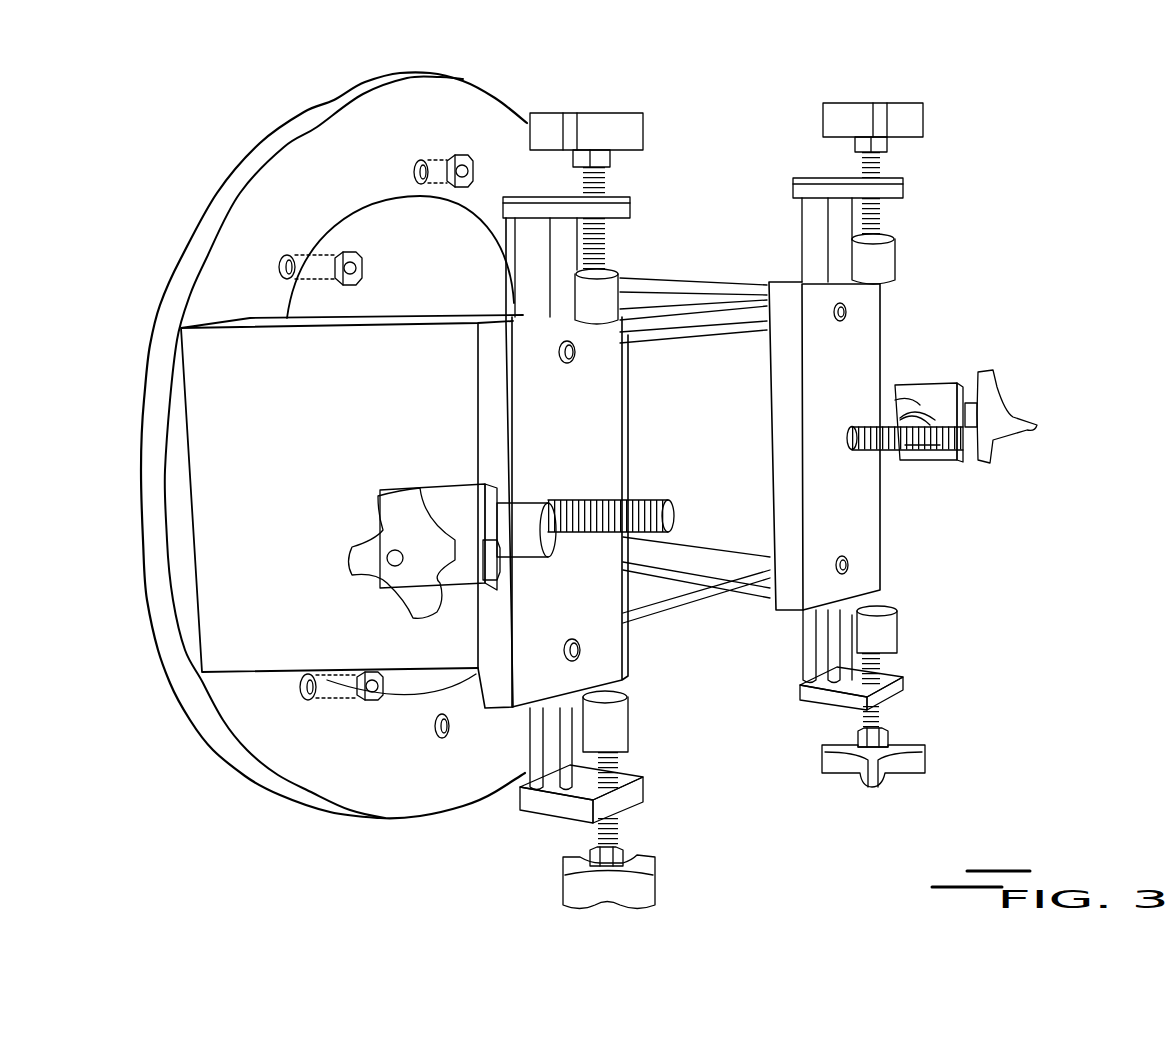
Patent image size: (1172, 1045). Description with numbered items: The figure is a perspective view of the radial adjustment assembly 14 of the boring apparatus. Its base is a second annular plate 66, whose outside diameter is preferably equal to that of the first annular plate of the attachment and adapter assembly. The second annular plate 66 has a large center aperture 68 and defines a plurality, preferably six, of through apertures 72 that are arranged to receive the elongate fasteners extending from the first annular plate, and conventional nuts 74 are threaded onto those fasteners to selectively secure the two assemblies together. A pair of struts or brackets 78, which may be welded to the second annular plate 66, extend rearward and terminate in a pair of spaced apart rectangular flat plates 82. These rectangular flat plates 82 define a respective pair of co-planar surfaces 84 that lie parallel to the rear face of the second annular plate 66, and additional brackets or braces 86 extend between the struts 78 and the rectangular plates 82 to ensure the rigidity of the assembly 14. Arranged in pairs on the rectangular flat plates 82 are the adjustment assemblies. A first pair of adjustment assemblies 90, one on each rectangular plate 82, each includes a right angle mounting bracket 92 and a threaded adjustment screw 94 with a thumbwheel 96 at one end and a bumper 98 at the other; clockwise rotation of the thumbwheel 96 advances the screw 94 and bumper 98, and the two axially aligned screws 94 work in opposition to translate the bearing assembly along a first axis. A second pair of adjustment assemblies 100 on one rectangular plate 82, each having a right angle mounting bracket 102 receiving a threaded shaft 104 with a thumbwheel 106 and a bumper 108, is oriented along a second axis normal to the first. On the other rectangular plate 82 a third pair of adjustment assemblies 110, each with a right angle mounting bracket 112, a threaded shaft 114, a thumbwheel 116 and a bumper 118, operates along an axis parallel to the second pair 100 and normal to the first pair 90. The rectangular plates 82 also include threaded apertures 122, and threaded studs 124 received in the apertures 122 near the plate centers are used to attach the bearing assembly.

The radial adjustment assembly 14 is at (990, 88).
The second annular plate 66 is at (478, 107).
The large center aperture 68 is at (480, 302).
The through apertures 72 is at (290, 257).
The nuts 74 is at (409, 230).
The struts or brackets 78 is at (336, 414).
The rectangular flat plates 82 is at (492, 398).
The co-planar surfaces 84 is at (568, 422).
The brackets or braces 86 is at (708, 323).
The first pair of adjustment assemblies 90 is at (325, 528).
The right angle mounting bracket 92 is at (452, 494).
The threaded adjustment screw 94 is at (490, 565).
The thumbwheel 96 is at (388, 578).
The bumper 98 is at (532, 508).
The second pair of adjustment assemblies 100 is at (628, 92).
The right angle mounting bracket 102 is at (543, 765).
The threaded shaft 104 is at (630, 826).
The thumbwheel 106 is at (640, 892).
The bumper 108 is at (624, 730).
The third pair of adjustment assemblies 110 is at (975, 142).
The right angle mounting bracket 112 is at (810, 662).
The threaded shaft 114 is at (900, 718).
The thumbwheel 116 is at (918, 763).
The bumper 118 is at (887, 633).
The threaded apertures 122 is at (833, 322).
The threaded studs 124 is at (663, 503).